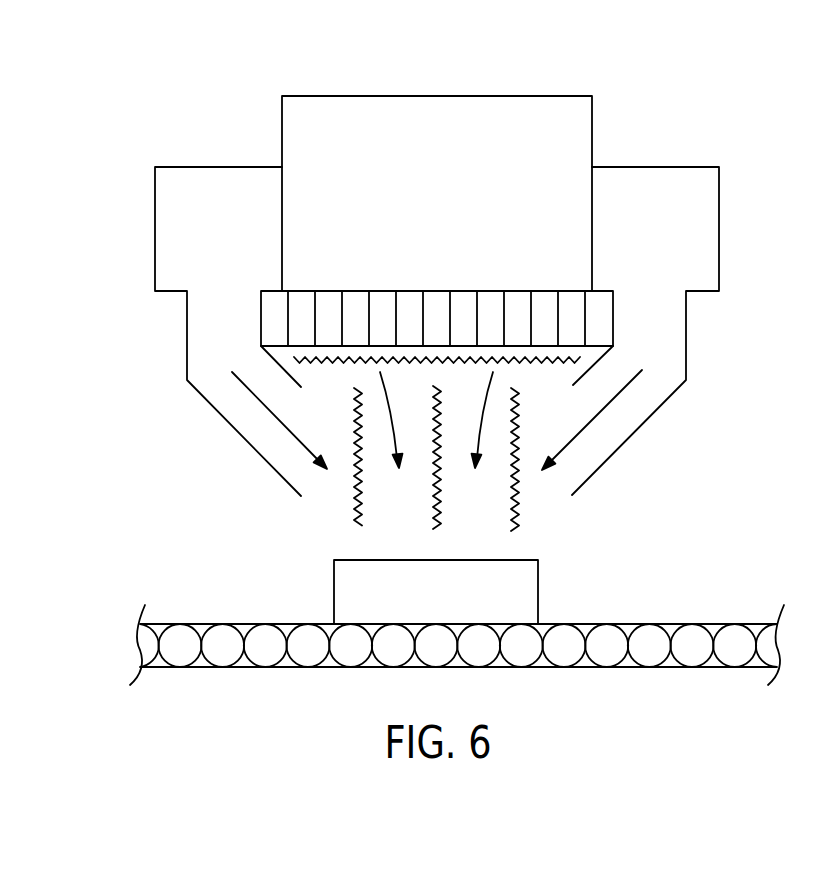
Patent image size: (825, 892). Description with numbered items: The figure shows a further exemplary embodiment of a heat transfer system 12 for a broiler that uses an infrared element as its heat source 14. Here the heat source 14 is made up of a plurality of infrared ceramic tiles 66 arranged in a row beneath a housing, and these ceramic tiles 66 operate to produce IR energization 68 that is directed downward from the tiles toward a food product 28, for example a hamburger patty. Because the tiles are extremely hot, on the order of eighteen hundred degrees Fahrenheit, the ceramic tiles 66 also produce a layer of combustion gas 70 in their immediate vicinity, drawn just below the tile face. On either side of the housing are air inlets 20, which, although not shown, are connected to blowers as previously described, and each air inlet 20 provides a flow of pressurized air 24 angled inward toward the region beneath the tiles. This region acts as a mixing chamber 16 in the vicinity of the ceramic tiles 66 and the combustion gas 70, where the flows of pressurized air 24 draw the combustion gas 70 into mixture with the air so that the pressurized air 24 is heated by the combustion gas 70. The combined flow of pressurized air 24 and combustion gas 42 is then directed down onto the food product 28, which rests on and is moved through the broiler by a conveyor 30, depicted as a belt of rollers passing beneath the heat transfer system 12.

The heat transfer system 12 is at (576, 55).
The heat source 14 is at (557, 182).
The mixing chamber 16 is at (435, 374).
The air inlet 20 is at (180, 215).
The flow of pressurized air 24 is at (298, 440).
The food product 28 is at (423, 604).
The conveyor 30 is at (293, 623).
The combustion gas 42 is at (395, 435).
The ceramic tiles 66 is at (355, 298).
The IR energization 68 is at (357, 493).
The layer of combustion gas 70 is at (547, 360).